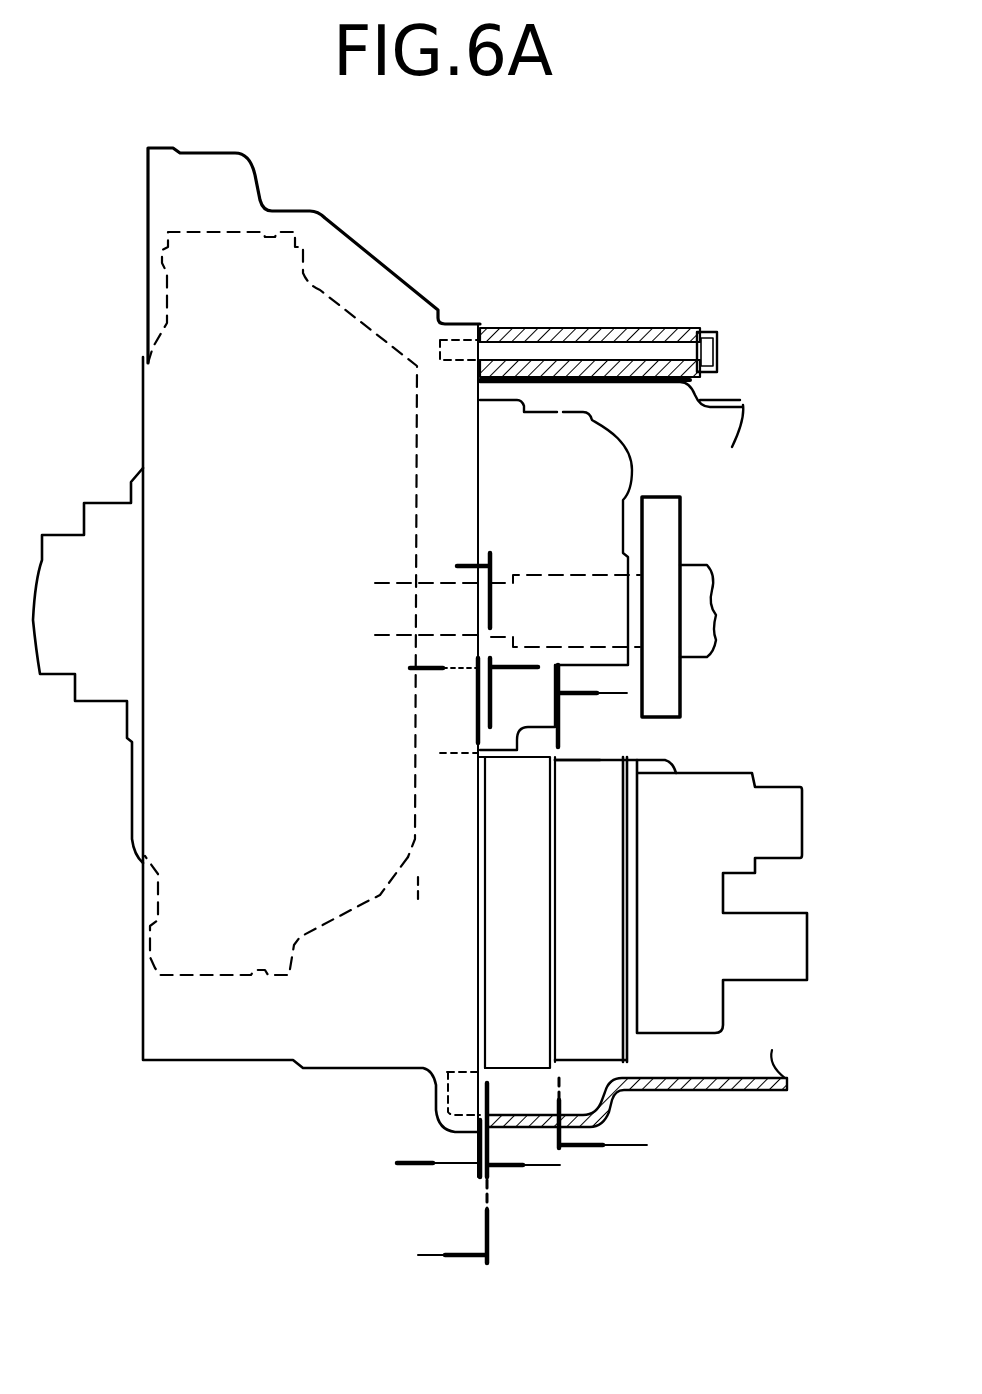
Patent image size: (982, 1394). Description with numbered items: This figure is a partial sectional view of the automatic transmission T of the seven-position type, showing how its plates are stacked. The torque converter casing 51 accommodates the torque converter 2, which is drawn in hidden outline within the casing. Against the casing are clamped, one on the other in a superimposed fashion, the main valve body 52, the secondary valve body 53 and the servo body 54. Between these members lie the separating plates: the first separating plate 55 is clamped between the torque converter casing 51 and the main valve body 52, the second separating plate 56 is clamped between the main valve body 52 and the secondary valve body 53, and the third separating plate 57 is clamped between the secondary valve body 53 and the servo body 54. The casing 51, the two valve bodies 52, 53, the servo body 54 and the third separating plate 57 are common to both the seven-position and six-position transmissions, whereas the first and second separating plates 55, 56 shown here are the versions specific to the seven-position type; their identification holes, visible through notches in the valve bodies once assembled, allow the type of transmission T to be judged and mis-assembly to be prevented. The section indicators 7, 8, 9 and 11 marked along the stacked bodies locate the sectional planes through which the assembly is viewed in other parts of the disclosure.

The automatic transmission T is at (506, 242).
The torque converter 2 is at (281, 603).
The torque converter casing 51 is at (408, 284).
The main valve body 52 is at (533, 872).
The secondary valve body 53 is at (605, 872).
The servo body 54 is at (690, 874).
The first separating plate 55 is at (477, 1018).
The second separating plate 56 is at (558, 790).
The third separating plate 57 is at (632, 997).
The section line 7- 7 is at (419, 922).
The section line 8- 8 is at (454, 916).
The section line 9- 9 is at (530, 953).
The section line 11- 11 is at (622, 924).